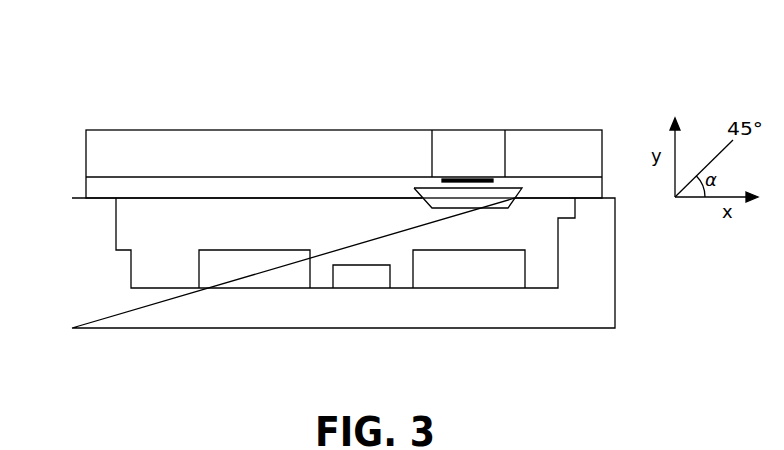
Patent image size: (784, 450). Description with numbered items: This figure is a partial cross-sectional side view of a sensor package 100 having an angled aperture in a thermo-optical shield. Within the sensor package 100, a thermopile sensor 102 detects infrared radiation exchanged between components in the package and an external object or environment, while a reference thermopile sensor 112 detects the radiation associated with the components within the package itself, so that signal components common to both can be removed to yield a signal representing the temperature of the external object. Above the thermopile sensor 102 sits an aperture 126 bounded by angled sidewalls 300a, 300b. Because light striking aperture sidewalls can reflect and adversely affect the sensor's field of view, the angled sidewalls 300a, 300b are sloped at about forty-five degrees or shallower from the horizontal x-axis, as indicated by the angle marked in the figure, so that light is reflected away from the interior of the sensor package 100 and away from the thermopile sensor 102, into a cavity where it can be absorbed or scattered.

The sensor package 100 is at (86, 40).
The thermopile sensor 102 is at (470, 273).
The reference thermopile sensor 112 is at (253, 273).
The aperture 126 is at (461, 195).
The angled sidewall 300a is at (428, 185).
The angled sidewall 300b is at (505, 183).